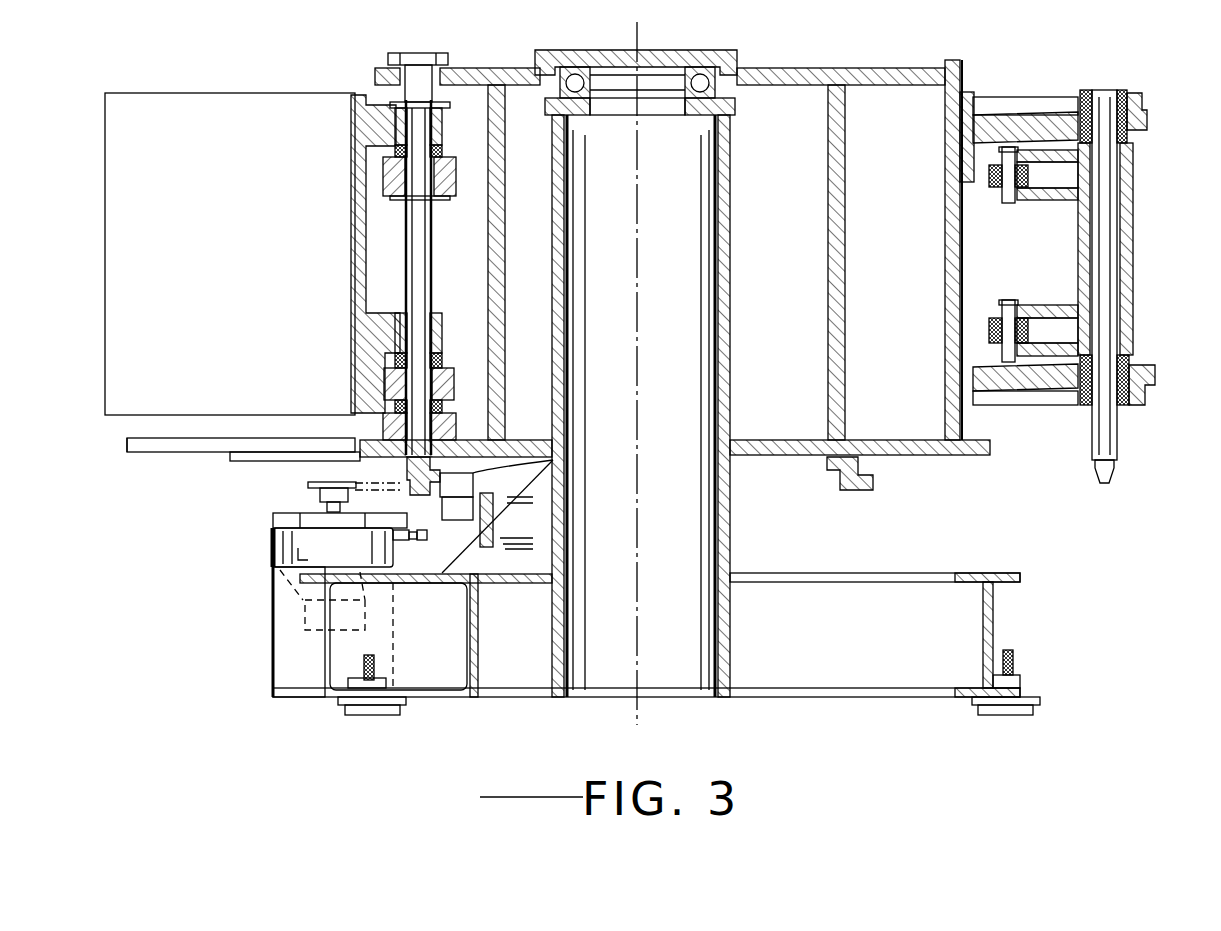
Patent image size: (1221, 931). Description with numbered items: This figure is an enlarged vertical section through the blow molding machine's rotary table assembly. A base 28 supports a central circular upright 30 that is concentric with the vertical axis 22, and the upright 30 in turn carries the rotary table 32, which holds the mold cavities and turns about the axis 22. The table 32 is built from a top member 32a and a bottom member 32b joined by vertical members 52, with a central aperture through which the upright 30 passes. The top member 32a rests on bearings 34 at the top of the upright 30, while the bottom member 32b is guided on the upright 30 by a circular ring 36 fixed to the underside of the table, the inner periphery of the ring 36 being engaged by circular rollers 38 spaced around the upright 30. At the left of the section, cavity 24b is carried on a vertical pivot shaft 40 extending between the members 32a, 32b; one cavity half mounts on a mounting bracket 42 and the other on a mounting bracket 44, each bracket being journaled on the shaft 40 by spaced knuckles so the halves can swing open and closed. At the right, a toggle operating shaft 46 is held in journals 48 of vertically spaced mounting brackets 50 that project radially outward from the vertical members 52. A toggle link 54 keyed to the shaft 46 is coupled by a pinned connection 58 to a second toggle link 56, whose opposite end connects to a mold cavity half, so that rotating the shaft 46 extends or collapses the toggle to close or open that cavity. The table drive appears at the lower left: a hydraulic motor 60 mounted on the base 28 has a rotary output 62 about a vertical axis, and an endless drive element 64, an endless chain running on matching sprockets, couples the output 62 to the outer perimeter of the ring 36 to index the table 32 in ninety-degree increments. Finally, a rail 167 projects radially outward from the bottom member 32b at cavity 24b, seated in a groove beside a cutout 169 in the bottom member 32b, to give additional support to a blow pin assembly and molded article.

The axis 22 is at (640, 38).
The cavity 24b is at (185, 93).
The base 28 is at (995, 613).
The central circular upright 30 is at (735, 246).
The rotary table 32 is at (965, 60).
The top member 32a is at (840, 68).
The bottom member 32b is at (967, 456).
The bearings 34 is at (570, 62).
The circular ring 36 is at (404, 463).
The circular rollers 38 is at (535, 457).
The vertical pivot shaft 40 is at (418, 70).
The mounting bracket 42 is at (351, 192).
The mounting bracket 44 is at (455, 200).
The toggle operating shaft 46 is at (1105, 90).
The journals 48 is at (1148, 112).
The mounting brackets 50 is at (1033, 97).
The vertical members 52 is at (945, 245).
The toggle link 54 is at (1055, 203).
The toggle link 56 is at (987, 170).
The pinned connection 58 is at (1012, 300).
The hydraulic motor 60 is at (270, 552).
The rotary output 62 is at (310, 495).
The endless drive element 64 is at (270, 578).
The rail 167 is at (128, 445).
The cutout 169 is at (178, 452).